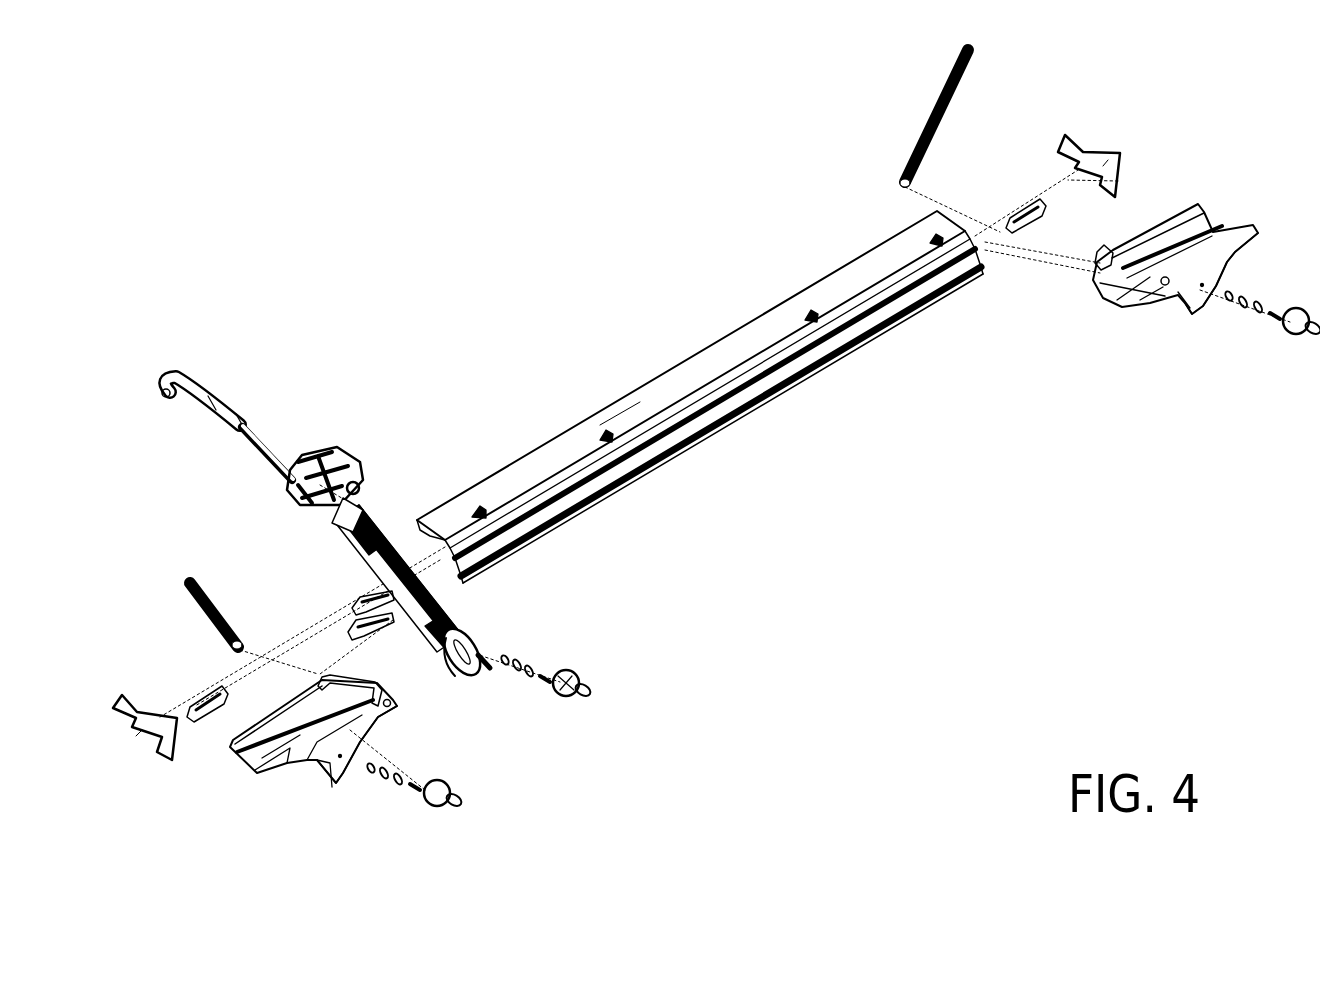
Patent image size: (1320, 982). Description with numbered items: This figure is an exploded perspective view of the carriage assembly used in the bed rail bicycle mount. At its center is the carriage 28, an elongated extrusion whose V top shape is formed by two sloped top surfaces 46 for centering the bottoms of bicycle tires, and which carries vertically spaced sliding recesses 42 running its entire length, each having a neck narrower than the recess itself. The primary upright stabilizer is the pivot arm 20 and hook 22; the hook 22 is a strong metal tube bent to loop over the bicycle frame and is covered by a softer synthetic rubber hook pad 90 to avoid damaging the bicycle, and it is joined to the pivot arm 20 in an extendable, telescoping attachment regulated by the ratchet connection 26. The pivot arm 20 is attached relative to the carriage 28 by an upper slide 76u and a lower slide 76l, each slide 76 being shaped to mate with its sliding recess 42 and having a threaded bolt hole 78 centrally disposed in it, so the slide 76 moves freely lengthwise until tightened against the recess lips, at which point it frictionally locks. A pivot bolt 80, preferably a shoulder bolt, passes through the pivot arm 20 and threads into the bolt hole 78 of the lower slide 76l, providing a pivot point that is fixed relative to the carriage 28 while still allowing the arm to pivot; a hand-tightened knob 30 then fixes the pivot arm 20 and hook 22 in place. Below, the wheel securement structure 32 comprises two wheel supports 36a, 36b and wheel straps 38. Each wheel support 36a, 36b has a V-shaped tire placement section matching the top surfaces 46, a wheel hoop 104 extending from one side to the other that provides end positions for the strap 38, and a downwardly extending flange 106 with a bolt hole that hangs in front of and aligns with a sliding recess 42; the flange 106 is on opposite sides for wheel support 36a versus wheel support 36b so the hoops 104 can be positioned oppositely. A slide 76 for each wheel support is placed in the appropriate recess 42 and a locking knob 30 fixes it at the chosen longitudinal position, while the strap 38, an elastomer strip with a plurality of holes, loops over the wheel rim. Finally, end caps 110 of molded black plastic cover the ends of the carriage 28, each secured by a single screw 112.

The pivot arm 20 is at (380, 527).
The hook 22 is at (267, 432).
The ratchet connection 26 is at (312, 450).
The carriage 28 is at (668, 375).
The knob 30 is at (567, 700).
The wheel securement structure 32 is at (1125, 378).
The wheel support 36a is at (258, 777).
The wheel support 36b is at (1215, 218).
The wheel strap 38 is at (188, 583).
The sliding recess 42 is at (805, 358).
The sloped top surface 46 is at (775, 345).
The slide 76 is at (203, 693).
The upper slide 76u is at (362, 602).
The lower slide 76l is at (348, 628).
The threaded bolt hole 78 is at (222, 708).
The pivot bolt 80 is at (490, 670).
The hook pad 90 is at (188, 385).
The wheel hoop 104 is at (370, 673).
The flange 106 is at (337, 767).
The end cap 110 is at (117, 700).
The screw 112 is at (127, 740).